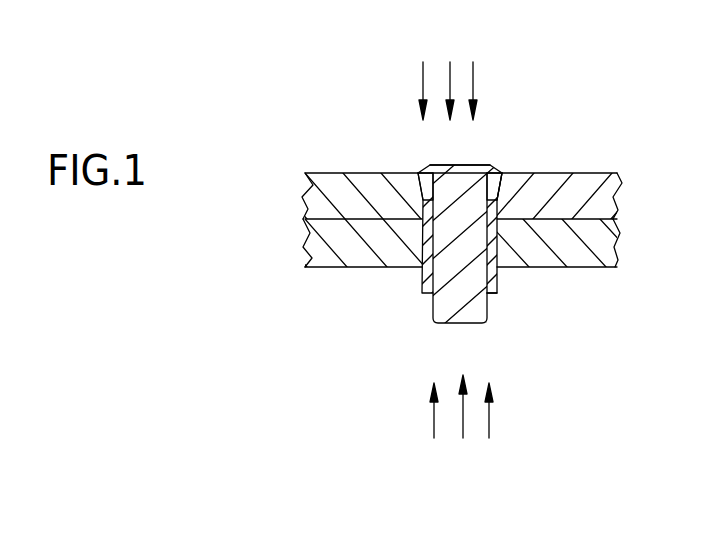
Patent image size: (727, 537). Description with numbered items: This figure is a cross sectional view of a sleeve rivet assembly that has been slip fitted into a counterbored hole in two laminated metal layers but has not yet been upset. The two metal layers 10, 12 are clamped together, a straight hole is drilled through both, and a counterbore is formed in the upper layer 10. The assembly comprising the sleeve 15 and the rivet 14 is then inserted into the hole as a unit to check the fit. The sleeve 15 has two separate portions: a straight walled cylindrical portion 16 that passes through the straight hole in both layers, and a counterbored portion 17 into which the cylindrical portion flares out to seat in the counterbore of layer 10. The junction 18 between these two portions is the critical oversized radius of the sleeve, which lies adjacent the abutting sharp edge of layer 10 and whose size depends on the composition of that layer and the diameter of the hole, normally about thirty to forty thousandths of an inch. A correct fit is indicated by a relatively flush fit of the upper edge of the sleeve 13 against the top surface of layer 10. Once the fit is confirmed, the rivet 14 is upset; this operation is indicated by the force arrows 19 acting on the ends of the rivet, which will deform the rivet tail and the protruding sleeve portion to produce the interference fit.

The metal layer 10 is at (308, 196).
The metal layer 12 is at (308, 260).
The upper edge of the sleeve 13 is at (500, 190).
The rivet 14 is at (486, 322).
The sleeve 15 is at (422, 246).
The straight walled cylindrical portion 16 is at (497, 273).
The counterbored portion 17 is at (466, 165).
The junction 18 is at (416, 196).
The force arrows 19 is at (473, 68).